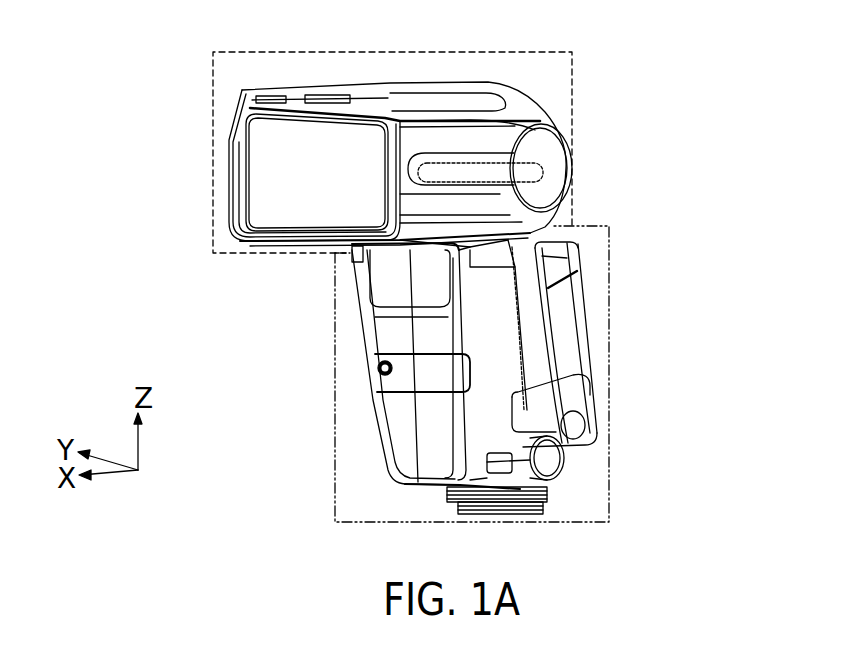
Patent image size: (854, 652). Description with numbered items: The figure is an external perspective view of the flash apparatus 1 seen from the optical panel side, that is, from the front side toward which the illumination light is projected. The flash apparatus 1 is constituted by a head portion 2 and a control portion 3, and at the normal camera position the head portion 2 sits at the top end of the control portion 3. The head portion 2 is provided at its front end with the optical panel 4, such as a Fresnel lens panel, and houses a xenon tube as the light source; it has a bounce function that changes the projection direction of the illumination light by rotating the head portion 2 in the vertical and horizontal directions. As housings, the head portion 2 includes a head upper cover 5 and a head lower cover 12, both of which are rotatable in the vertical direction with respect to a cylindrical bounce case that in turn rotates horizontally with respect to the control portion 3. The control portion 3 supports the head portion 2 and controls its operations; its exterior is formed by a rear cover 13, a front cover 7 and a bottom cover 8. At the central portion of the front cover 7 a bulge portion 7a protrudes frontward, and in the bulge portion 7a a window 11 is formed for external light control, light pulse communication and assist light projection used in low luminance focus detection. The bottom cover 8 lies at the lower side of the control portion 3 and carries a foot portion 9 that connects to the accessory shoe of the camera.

The flash apparatus 1 is at (157, 42).
The head portion 2 is at (573, 92).
The control portion 3 is at (610, 326).
The optical panel 4 is at (258, 192).
The head upper cover 5 is at (480, 138).
The front cover 7 is at (527, 303).
The bulge portion 7a is at (385, 330).
The bottom cover 8 is at (497, 483).
The foot portion 9 is at (457, 505).
The window 11 is at (400, 443).
The head lower cover 12 is at (497, 208).
The rear cover 13 is at (570, 348).